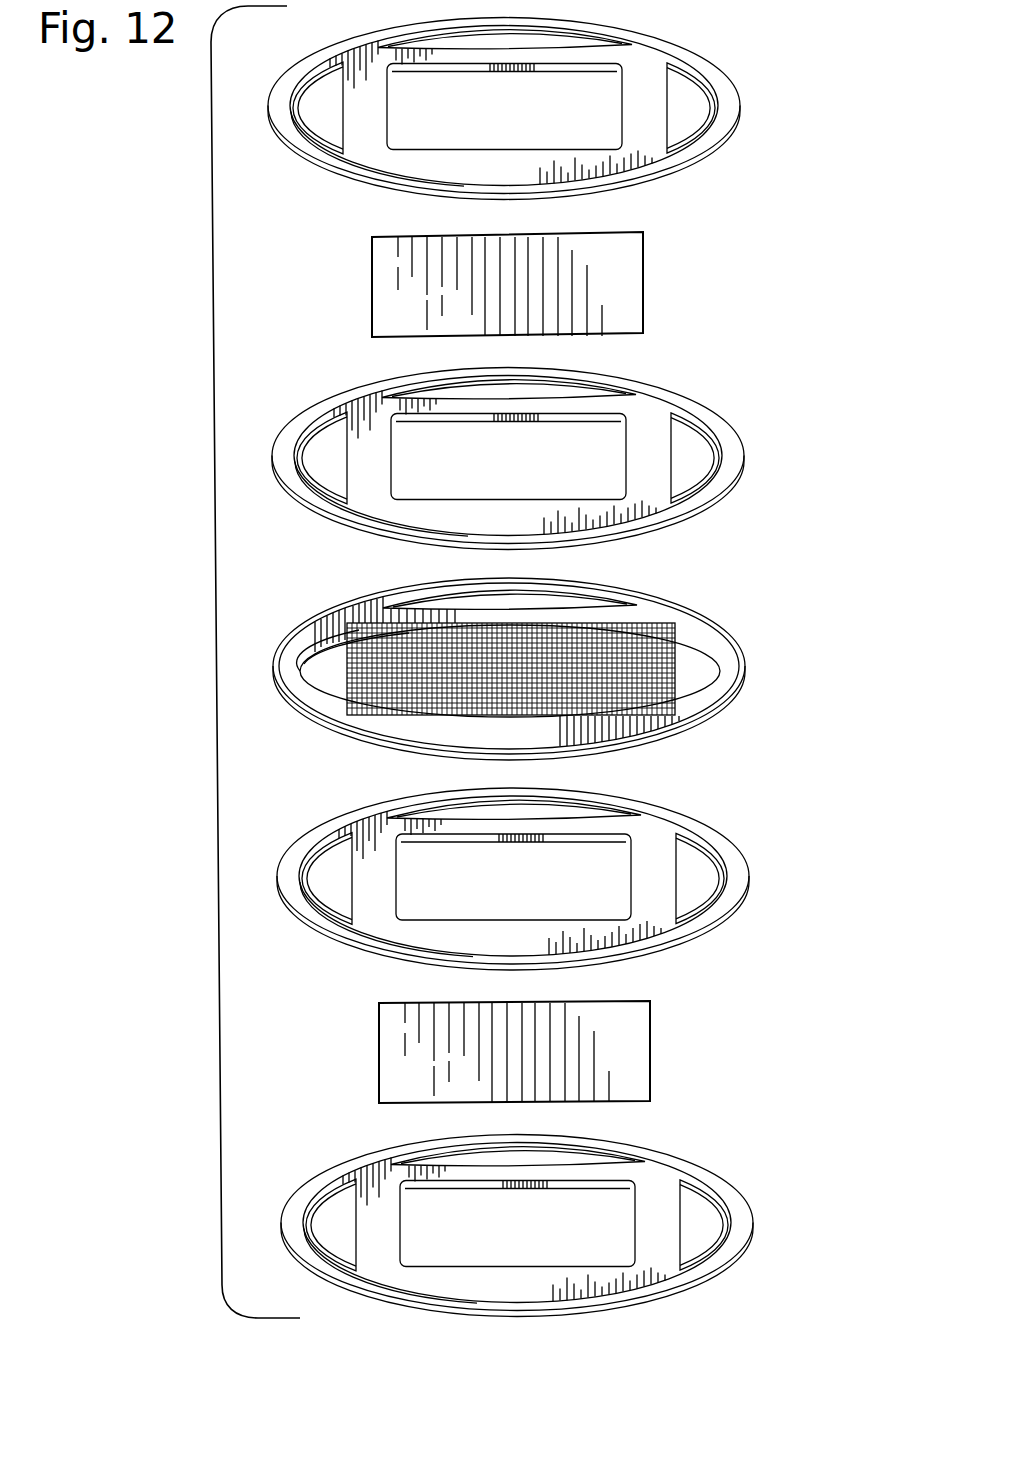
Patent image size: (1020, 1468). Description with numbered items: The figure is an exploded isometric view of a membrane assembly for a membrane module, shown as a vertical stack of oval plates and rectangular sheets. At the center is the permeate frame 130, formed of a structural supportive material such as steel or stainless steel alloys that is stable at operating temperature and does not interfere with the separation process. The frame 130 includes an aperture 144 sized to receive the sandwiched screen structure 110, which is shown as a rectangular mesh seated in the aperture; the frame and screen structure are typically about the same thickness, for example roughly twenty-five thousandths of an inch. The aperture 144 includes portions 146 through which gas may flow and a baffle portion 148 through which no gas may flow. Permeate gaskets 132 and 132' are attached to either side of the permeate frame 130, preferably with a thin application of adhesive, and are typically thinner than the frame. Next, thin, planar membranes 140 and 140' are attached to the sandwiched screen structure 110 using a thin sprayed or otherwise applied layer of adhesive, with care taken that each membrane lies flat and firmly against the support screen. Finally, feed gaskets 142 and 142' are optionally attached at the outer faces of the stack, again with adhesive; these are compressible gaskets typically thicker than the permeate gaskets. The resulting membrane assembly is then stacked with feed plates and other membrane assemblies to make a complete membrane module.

The feed gasket 142 is at (545, 109).
The membrane 140 is at (548, 284).
The permeate gasket 132 is at (551, 459).
The permeate frame 130 is at (545, 672).
The sandwiched screen structure 110 is at (542, 638).
The portions 146 is at (523, 643).
The aperture 144 is at (310, 690).
The baffle portion 148 is at (603, 749).
The permeate gasket 132' is at (558, 879).
The membrane 140' is at (559, 1052).
The feed gasket 142' is at (561, 1226).